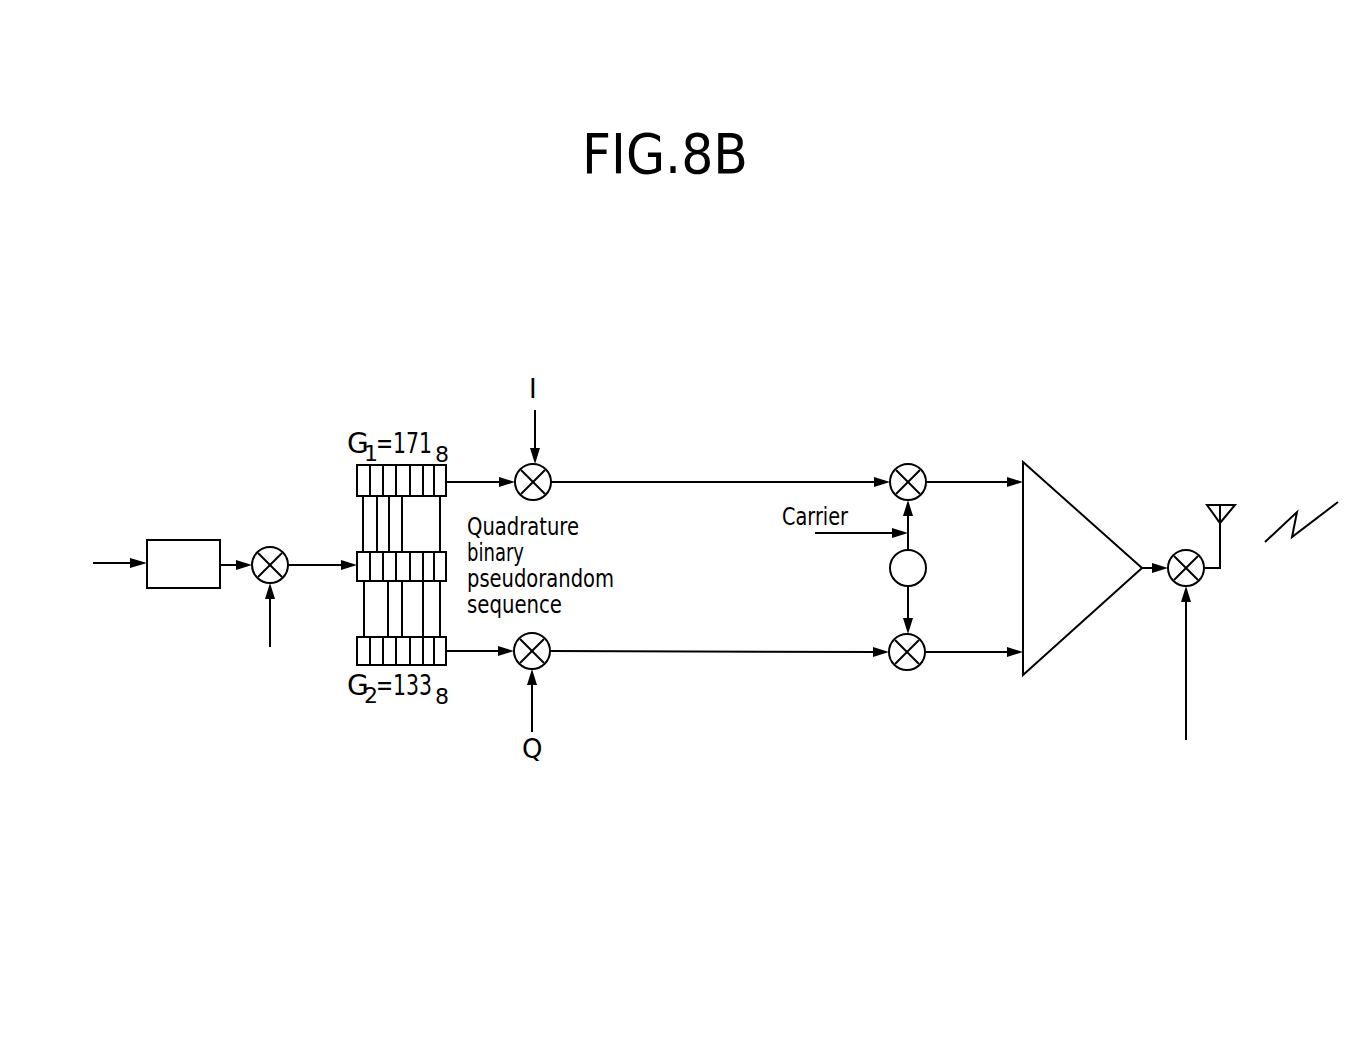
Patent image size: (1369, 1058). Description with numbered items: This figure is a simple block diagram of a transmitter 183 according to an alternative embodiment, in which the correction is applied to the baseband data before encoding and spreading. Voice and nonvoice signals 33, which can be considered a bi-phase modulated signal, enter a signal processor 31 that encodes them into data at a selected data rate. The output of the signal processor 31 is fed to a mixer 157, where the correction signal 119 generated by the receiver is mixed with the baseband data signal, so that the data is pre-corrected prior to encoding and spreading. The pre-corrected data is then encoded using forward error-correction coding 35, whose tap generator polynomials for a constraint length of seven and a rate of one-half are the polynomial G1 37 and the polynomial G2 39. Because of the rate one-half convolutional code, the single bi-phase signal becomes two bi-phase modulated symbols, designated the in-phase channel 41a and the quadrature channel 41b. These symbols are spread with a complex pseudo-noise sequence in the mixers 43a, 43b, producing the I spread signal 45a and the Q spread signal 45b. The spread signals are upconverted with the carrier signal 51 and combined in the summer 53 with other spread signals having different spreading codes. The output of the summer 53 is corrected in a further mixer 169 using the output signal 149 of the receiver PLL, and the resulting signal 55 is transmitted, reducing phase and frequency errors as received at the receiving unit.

The transmitter 183 is at (242, 262).
The voice and nonvoice signals 33 is at (104, 560).
The signal processor 31 is at (183, 590).
The mixer 157 is at (272, 547).
The correction signal 119 is at (256, 641).
The tap generator polynomial G1 37 is at (357, 479).
The forward error-correction coding 35 is at (356, 575).
The tap generator polynomial G2 39 is at (357, 648).
The in-phase channel 41a is at (473, 474).
The quadrature channel 41b is at (474, 655).
The I mixer 43a is at (540, 433).
The Q mixer 43b is at (538, 712).
The I spread signal 45a is at (694, 475).
The Q spread signal 45b is at (686, 654).
The carrier signal 51 is at (855, 533).
The summer 53 is at (1073, 633).
The mixer 169 is at (1181, 550).
The output signal of the PLL 149 is at (1190, 680).
The transmitted signal 55 is at (1323, 513).